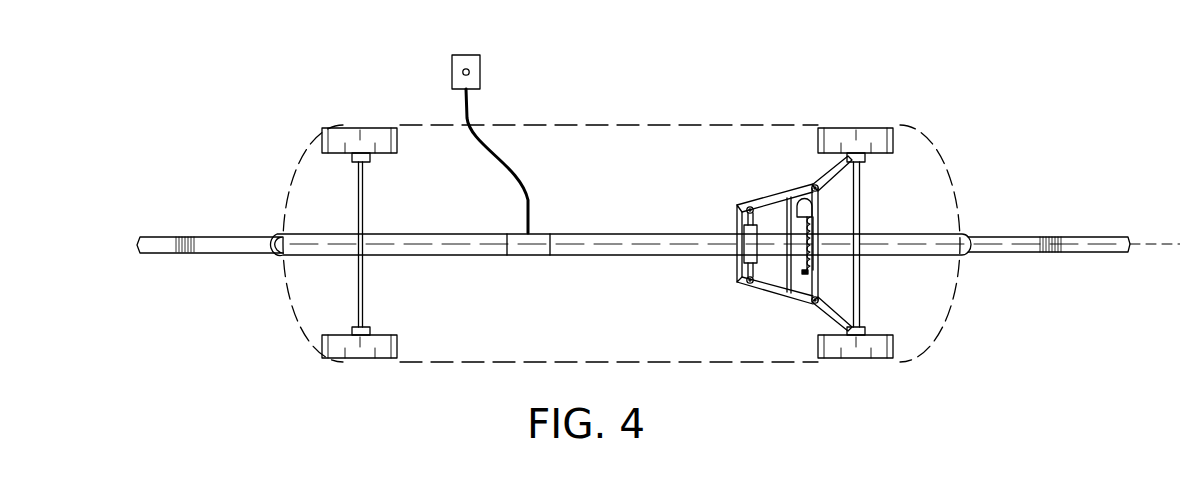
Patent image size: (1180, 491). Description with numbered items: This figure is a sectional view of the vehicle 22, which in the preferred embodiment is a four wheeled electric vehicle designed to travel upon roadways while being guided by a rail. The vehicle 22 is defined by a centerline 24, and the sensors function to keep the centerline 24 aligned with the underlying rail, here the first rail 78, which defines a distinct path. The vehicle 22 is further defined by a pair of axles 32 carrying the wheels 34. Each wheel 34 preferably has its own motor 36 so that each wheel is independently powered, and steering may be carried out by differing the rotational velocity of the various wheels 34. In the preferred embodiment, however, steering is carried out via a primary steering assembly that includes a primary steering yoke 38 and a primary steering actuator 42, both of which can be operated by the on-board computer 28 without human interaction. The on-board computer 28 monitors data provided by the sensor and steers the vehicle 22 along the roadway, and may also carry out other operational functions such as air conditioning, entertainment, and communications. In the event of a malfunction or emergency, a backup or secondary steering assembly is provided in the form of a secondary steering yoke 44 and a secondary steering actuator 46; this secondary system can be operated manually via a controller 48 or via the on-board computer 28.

The vehicle 22 is at (950, 170).
The centerline 24 is at (1153, 243).
The on-board computer 28 is at (528, 257).
The axles 32 is at (364, 196).
The wheels 34 is at (340, 134).
The motor 36 is at (350, 158).
The primary steering yoke 38 is at (820, 178).
The primary steering actuator 42 is at (804, 274).
The secondary steering yoke 44 is at (739, 207).
The secondary steering actuator 46 is at (734, 264).
The controller 48 is at (481, 73).
The first rail 78 is at (1067, 237).